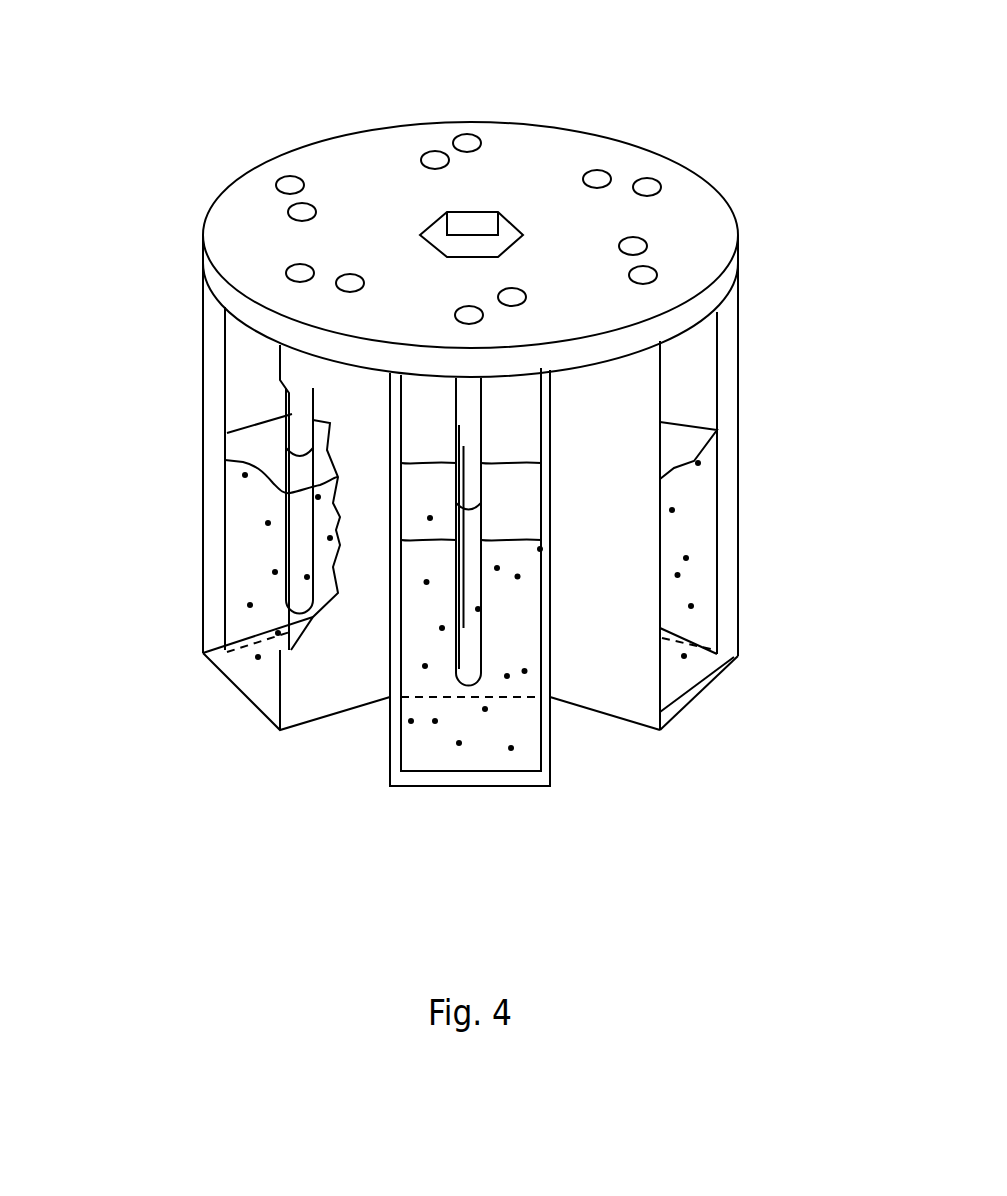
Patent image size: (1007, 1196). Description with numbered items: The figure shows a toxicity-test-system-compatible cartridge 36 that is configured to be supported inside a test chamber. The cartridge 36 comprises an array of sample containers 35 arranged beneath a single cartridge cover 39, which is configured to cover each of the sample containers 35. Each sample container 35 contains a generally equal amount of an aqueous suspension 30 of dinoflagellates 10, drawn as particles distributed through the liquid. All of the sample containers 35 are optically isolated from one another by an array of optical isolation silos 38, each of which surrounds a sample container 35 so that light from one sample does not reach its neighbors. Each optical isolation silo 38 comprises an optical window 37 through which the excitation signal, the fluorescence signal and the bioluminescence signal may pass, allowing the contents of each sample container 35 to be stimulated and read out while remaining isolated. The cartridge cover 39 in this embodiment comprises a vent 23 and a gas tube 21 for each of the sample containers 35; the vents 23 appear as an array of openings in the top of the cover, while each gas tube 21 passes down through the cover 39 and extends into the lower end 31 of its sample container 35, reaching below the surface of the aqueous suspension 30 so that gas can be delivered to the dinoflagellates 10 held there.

The cartridge 36 is at (136, 87).
The cartridge cover 39 is at (240, 243).
The vent 23 is at (598, 180).
The sample container 35 is at (225, 347).
The gas tube 21 is at (300, 420).
The aqueous suspension 30 is at (225, 460).
The lower end 31 is at (217, 499).
The optical window 37 is at (707, 326).
The optical isolation silo 38 is at (550, 786).
The dinoflagellates 10 is at (411, 728).